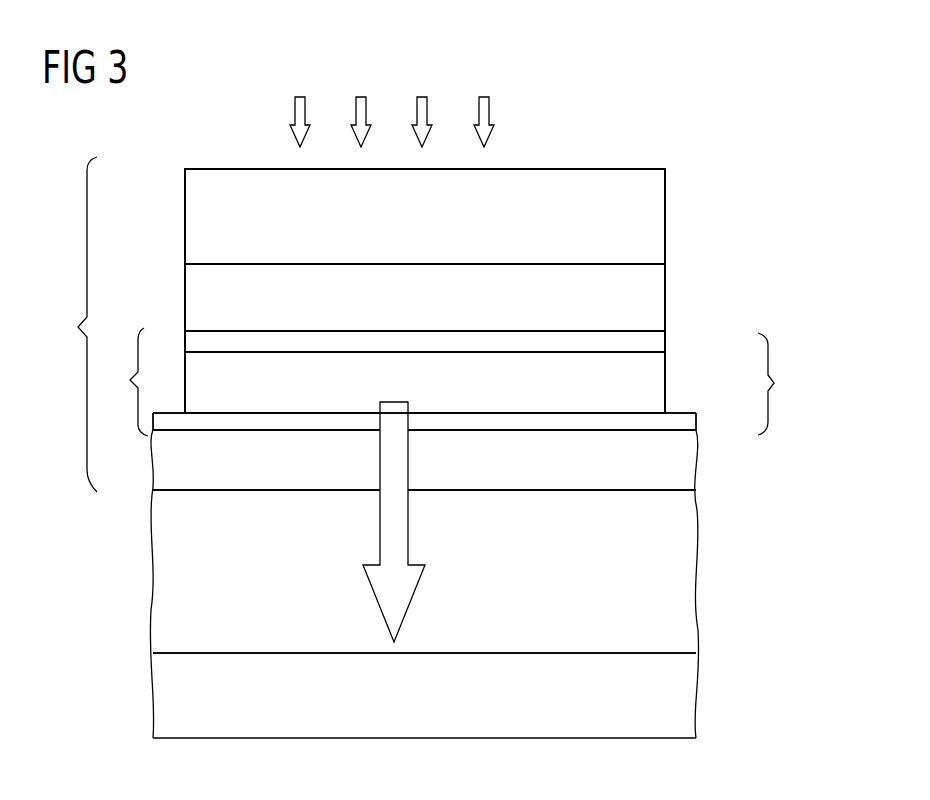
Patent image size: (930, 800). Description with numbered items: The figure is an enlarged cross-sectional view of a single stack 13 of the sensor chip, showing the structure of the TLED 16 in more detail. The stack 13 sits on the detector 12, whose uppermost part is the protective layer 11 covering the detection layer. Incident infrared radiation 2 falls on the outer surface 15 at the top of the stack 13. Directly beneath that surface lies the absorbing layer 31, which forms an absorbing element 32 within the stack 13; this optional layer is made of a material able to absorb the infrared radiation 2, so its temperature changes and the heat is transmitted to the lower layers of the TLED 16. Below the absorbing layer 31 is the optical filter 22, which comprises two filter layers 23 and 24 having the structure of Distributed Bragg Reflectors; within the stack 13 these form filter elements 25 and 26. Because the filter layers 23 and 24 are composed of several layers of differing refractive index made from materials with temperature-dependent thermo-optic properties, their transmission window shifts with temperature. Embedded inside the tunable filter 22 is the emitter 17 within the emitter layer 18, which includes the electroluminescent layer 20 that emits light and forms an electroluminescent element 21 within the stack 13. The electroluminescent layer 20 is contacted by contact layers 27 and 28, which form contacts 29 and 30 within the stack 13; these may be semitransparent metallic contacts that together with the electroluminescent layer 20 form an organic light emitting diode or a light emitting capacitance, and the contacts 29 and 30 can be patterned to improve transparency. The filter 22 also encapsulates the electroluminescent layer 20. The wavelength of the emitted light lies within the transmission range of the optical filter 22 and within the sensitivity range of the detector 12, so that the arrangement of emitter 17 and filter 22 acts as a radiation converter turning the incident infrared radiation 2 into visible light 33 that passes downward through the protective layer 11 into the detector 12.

The infrared radiation 2 is at (488, 112).
The protective layer 11 is at (685, 582).
The detector 12 is at (685, 705).
The stack 13 is at (675, 140).
The outer surface 15 is at (590, 167).
The TLED 16 is at (69, 324).
The emitter 17 is at (123, 382).
The emitter layer 18 is at (778, 384).
The electroluminescent layer 20 is at (813, 381).
The electroluminescent element 21 is at (652, 372).
The optical filter 22 is at (168, 300).
The filter layer 23 is at (730, 302).
The filter layer 24 is at (788, 478).
The filter element 25 is at (650, 295).
The filter element 26 is at (685, 472).
The contact layer 27 is at (787, 343).
The contact layer 28 is at (788, 423).
The contact 29 is at (652, 340).
The contact 30 is at (680, 424).
The absorbing layer 31 is at (730, 217).
The absorbing element 32 is at (650, 210).
The visible light 33 is at (400, 512).